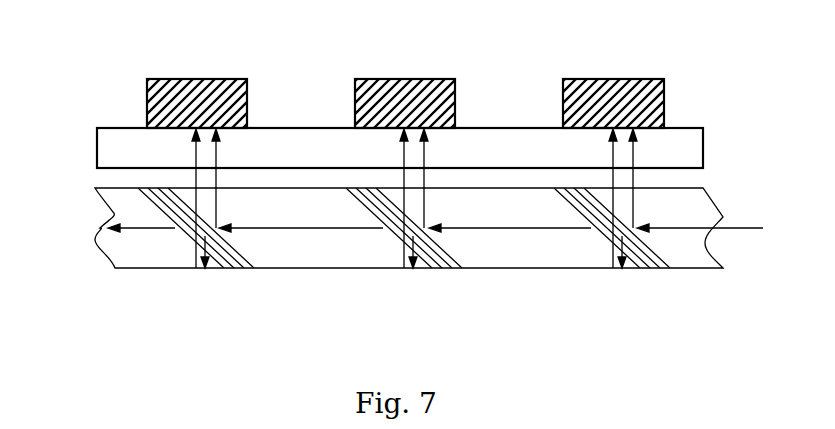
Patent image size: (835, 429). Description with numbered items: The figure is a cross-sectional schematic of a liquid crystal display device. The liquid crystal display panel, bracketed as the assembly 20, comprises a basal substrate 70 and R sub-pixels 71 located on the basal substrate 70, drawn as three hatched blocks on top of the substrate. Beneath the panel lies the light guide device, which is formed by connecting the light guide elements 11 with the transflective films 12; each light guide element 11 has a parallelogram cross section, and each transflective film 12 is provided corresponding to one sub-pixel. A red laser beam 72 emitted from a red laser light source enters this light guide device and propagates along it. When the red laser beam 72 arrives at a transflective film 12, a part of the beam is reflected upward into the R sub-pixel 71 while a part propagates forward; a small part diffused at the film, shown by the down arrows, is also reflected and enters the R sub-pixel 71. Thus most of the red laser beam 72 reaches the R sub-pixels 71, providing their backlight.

The element assembly 20 is at (84, 78).
The basal substrate 70 is at (673, 140).
The R sub-pixel 71 is at (219, 78).
The red laser beam 72 is at (747, 226).
The light guide element 11 is at (508, 250).
The transflective film 12 is at (438, 268).